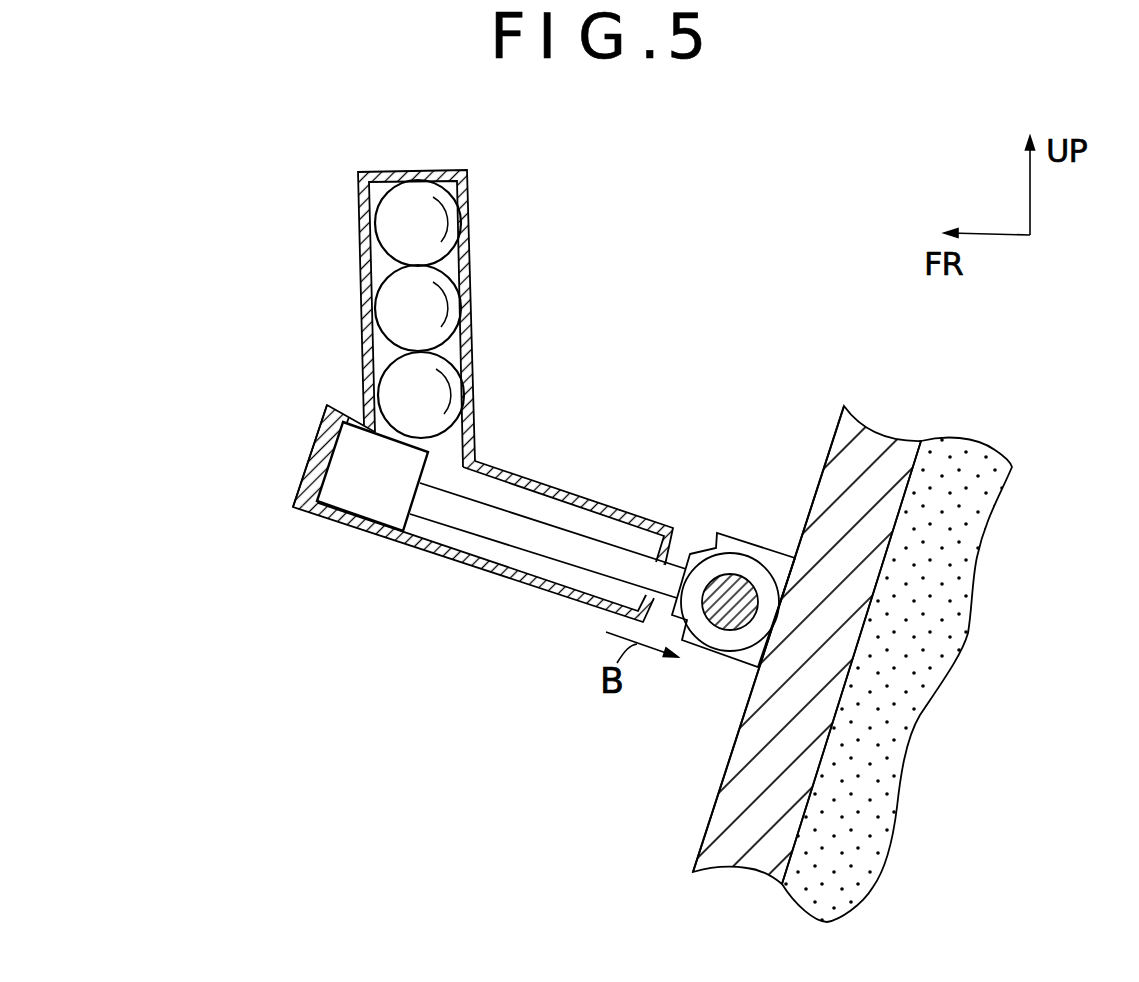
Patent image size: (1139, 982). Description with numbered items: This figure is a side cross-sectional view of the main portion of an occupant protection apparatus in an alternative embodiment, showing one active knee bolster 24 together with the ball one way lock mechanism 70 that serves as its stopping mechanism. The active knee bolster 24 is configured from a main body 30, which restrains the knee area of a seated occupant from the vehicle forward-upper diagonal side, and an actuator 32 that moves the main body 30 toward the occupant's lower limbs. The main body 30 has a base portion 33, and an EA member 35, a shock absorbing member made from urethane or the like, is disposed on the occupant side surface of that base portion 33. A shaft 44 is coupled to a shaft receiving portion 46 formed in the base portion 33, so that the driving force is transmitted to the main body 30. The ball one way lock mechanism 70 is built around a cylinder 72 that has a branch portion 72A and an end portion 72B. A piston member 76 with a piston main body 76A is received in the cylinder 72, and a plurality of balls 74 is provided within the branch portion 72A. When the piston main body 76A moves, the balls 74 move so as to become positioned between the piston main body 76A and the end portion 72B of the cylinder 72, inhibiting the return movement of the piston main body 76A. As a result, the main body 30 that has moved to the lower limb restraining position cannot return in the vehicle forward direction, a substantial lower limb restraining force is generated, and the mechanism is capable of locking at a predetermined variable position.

The active knee bolster 24 is at (712, 295).
The main body 30 is at (856, 393).
The actuator 32 is at (648, 493).
The base portion 33 is at (708, 823).
The EA member 35 is at (925, 656).
The shaft 44 is at (730, 590).
The shaft receiving portion 46 is at (747, 655).
The ball one way lock mechanism 70 is at (594, 488).
The cylinder 72 is at (518, 467).
The branch portion 72A is at (470, 291).
The end portion 72B is at (313, 462).
The balls 74 is at (400, 398).
The piston member 76 is at (547, 556).
The piston main body 76A is at (360, 500).